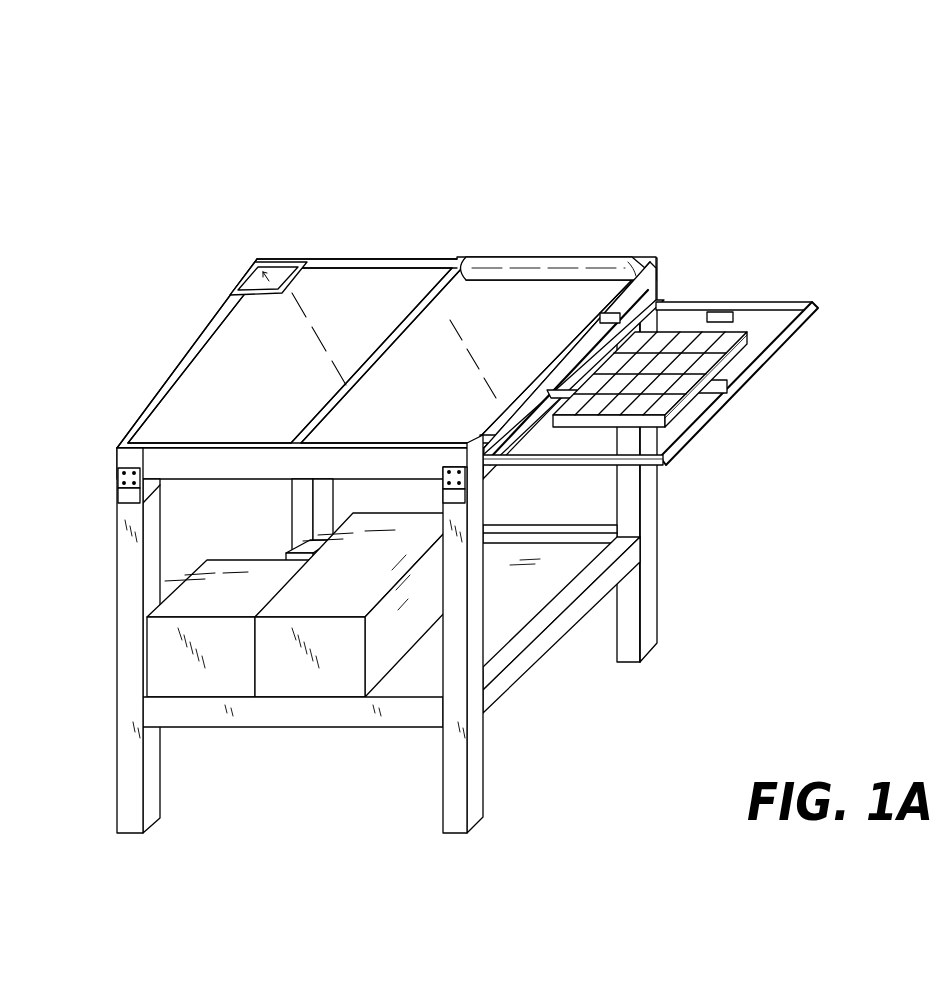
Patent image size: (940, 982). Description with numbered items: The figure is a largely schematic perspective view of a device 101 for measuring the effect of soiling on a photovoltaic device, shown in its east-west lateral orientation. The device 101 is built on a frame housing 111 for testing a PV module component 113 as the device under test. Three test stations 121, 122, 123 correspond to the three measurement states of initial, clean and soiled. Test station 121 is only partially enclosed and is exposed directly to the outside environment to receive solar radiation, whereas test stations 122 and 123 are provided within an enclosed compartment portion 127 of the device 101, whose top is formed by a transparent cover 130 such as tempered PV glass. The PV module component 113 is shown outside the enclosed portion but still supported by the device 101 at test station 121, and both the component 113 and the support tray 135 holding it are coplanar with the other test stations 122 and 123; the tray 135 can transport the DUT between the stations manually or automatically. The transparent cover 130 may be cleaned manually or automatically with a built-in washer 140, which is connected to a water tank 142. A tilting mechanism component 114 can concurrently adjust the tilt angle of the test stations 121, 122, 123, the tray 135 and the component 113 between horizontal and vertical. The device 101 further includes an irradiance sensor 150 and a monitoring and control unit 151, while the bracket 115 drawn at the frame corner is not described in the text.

The device 101 is at (280, 92).
The frame housing 111 is at (217, 482).
The PV module component 113 is at (722, 389).
The tilting mechanism component 114 is at (355, 326).
The bracket 115 is at (117, 495).
The test station 121 is at (820, 290).
The test station 122 is at (670, 234).
The test station 123 is at (482, 234).
The enclosed compartment portion 127 is at (138, 441).
The transparent cover 130 is at (288, 391).
The support tray 135 is at (706, 416).
The washer 140 is at (641, 259).
The water tank 142 is at (345, 682).
The irradiance sensor 150 is at (257, 262).
The monitoring and control unit 151 is at (160, 668).